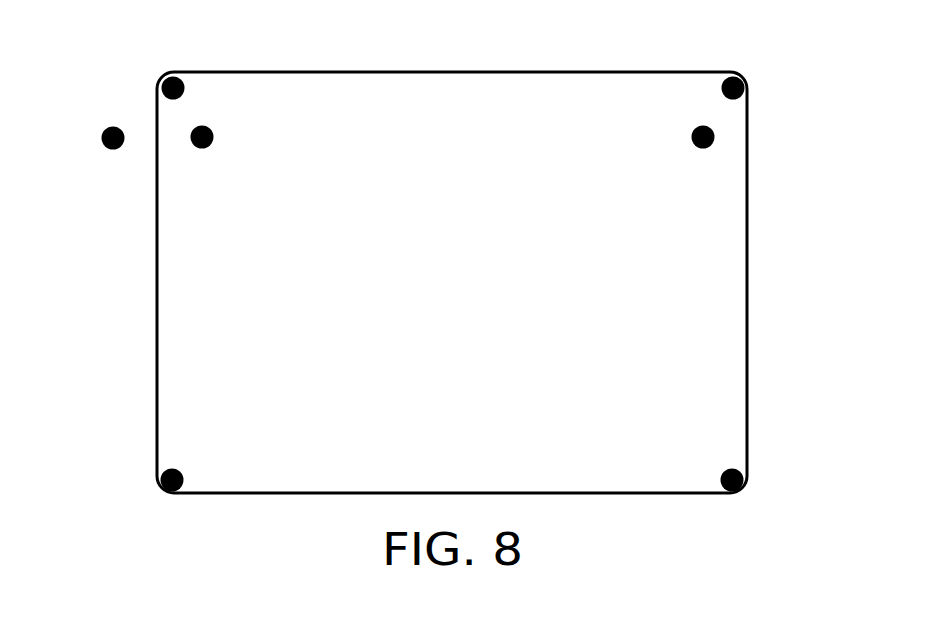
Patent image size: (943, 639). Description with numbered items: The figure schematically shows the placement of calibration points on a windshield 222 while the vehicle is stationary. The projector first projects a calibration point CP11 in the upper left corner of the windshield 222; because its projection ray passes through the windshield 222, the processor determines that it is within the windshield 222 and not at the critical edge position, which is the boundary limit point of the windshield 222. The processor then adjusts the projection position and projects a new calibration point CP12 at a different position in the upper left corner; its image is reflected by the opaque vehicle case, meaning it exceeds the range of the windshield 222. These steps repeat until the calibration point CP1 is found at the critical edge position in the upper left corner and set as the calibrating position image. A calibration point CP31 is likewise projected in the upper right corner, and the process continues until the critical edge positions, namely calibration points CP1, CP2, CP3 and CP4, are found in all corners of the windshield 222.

The windshield 222 is at (662, 72).
The calibration point CP1 is at (185, 87).
The calibration point CP11 is at (210, 148).
The calibration point CP12 is at (108, 127).
The calibration point CP2 is at (165, 472).
The calibration point CP3 is at (740, 97).
The calibration point CP31 is at (707, 148).
The calibration point CP4 is at (745, 481).